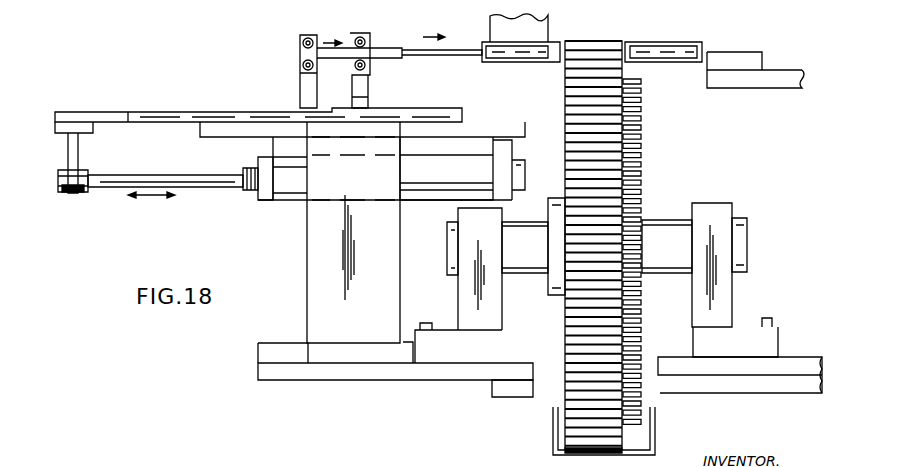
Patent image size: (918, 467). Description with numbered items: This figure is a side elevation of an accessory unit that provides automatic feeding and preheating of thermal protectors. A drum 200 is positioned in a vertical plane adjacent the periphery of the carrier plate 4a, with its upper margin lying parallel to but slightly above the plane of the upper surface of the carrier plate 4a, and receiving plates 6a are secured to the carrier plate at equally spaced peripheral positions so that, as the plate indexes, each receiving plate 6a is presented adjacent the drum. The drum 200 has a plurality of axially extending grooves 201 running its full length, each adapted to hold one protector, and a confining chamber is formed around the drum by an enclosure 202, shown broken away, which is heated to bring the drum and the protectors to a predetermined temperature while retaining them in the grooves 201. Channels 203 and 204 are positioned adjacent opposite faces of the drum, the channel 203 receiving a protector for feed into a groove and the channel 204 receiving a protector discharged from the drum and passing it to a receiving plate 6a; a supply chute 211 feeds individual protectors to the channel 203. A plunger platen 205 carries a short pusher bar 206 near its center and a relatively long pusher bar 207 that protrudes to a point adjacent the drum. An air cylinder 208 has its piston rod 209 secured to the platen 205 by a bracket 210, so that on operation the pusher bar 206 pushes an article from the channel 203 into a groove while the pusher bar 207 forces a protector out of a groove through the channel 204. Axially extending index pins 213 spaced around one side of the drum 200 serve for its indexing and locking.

The drum 200 is at (564, 90).
The grooves 201 is at (585, 119).
The enclosure 202 is at (553, 427).
The channel 203 is at (503, 55).
The channel 204 is at (677, 62).
The plunger platen 205 is at (158, 99).
The short pusher bar 206 is at (388, 57).
The long pusher bar 207 is at (443, 50).
The air cylinder 208 is at (292, 201).
The piston rod 209 is at (137, 178).
The bracket 210 is at (78, 158).
The supply chute 211 is at (492, 25).
The index pins 213 is at (639, 167).
The receiving plates 6a is at (763, 58).
The carrier plate 4a is at (770, 86).